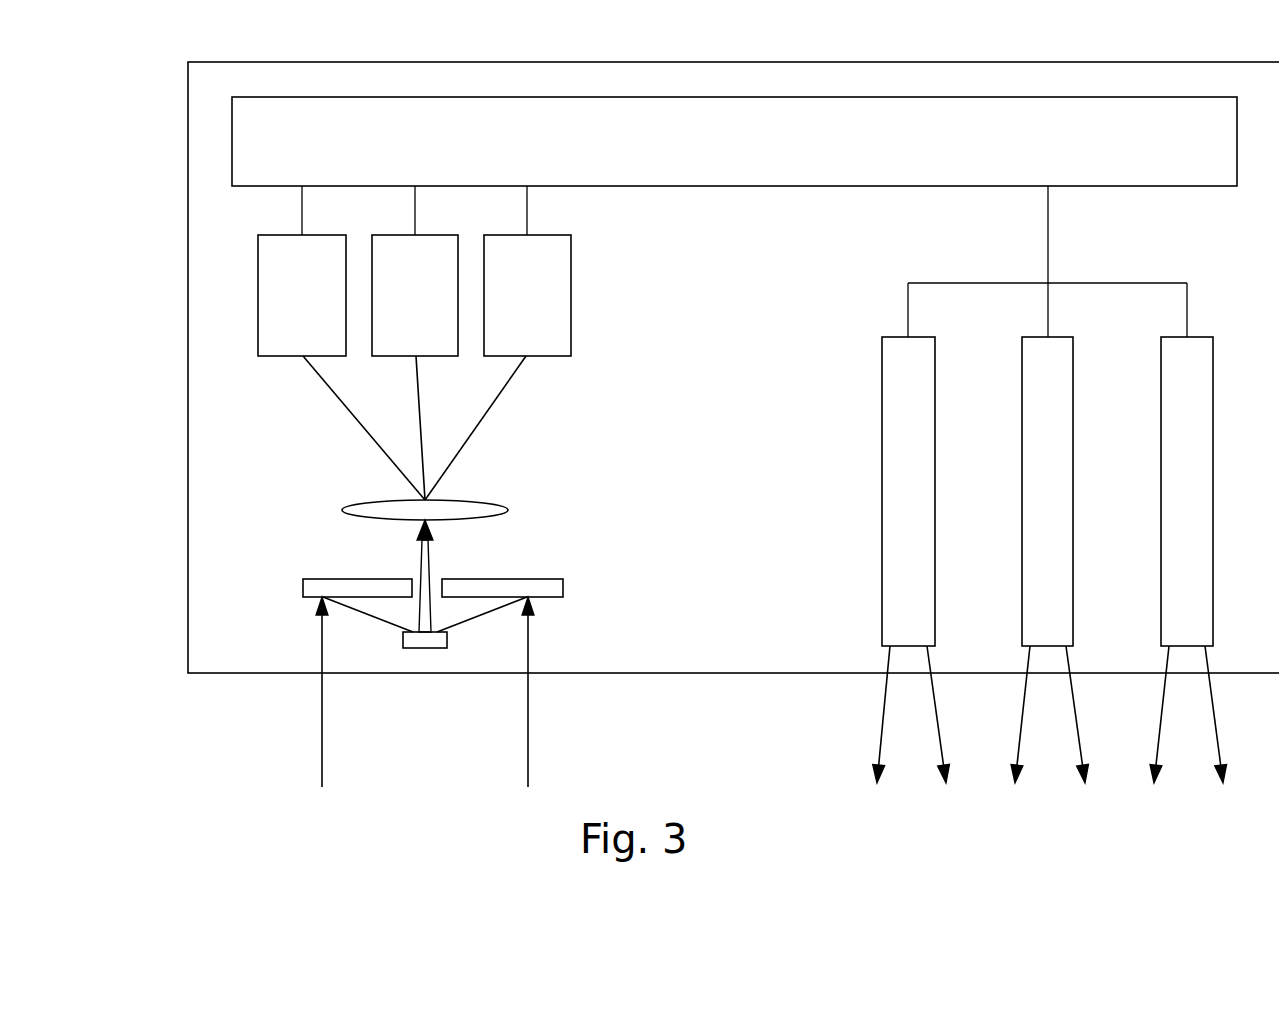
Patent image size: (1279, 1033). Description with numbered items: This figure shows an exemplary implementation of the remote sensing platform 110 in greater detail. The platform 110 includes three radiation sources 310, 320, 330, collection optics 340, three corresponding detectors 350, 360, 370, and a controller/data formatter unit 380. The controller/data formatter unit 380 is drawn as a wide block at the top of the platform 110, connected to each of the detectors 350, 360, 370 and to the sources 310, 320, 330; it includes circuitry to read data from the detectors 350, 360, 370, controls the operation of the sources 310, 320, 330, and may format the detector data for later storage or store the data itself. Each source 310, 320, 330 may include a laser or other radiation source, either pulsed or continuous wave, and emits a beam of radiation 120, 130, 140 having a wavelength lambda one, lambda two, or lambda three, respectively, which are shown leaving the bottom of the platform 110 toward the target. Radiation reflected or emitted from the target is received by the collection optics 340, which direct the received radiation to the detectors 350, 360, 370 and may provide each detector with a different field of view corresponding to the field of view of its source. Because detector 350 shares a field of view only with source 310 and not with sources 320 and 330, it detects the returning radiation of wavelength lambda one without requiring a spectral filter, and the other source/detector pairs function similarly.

The remote sensing platform 110 is at (172, 107).
The controller/data formatter unit 380 is at (840, 170).
The detector 350 is at (268, 337).
The detector 360 is at (440, 337).
The detector 370 is at (562, 337).
The collection optics 340 is at (303, 475).
The radiation source 310 is at (900, 390).
The radiation source 320 is at (1040, 422).
The radiation source 330 is at (1187, 405).
The beam of radiation 120 is at (884, 834).
The beam of radiation 130 is at (1041, 834).
The beam of radiation 140 is at (1188, 834).